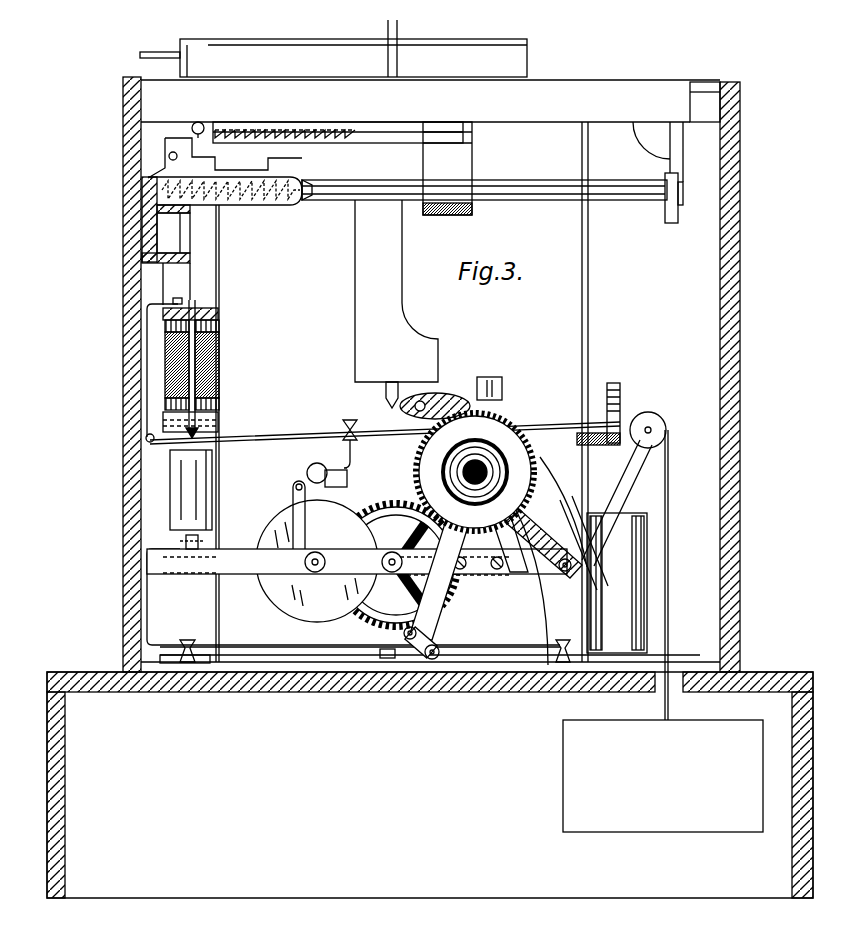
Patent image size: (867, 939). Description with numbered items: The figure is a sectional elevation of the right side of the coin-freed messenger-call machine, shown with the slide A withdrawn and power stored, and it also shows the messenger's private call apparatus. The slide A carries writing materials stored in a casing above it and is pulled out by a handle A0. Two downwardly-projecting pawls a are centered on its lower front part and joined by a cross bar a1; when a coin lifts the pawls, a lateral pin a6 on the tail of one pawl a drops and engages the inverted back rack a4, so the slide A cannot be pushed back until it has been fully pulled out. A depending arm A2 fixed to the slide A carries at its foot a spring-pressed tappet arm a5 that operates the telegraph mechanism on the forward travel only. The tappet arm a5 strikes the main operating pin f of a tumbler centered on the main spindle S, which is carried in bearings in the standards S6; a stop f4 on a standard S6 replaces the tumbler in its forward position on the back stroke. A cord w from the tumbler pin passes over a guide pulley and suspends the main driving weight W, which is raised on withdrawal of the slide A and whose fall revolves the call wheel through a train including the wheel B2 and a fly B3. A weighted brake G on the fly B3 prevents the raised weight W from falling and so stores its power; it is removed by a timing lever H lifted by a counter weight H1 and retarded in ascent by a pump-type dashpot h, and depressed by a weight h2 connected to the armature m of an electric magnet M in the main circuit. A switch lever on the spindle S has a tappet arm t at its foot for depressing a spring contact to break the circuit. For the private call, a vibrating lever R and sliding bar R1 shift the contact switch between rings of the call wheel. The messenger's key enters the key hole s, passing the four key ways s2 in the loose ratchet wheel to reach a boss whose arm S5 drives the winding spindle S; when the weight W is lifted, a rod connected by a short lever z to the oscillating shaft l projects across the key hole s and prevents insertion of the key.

The handle A0 is at (160, 44).
The slide A is at (353, 48).
The back rack a4 is at (300, 130).
The lateral pin a6 is at (225, 150).
The pawl a is at (225, 182).
The cross bar a1 is at (490, 198).
The depending arm A2 is at (396, 291).
The tappet arm a5 is at (381, 395).
The pin f is at (435, 406).
The stop f4 is at (477, 388).
The main spindle S is at (475, 472).
The key hole s is at (481, 469).
The key ways s2 is at (471, 472).
The arm S5 is at (546, 561).
The standards S6 is at (357, 595).
The timing lever H is at (385, 428).
The counter weight H1 is at (621, 415).
The cord w is at (676, 575).
The main driving weight W is at (663, 776).
The electric magnet M is at (193, 370).
The armature m is at (194, 422).
The weight h2 is at (191, 499).
The weighted brake G is at (328, 484).
The wheel B2 is at (396, 549).
The fly B3 is at (312, 540).
The sliding bar R1 is at (345, 644).
The vibrating lever R is at (420, 637).
The oscillating shaft l is at (438, 644).
The short lever z is at (443, 567).
The dashpot h is at (617, 583).
The tappet arm t is at (605, 508).